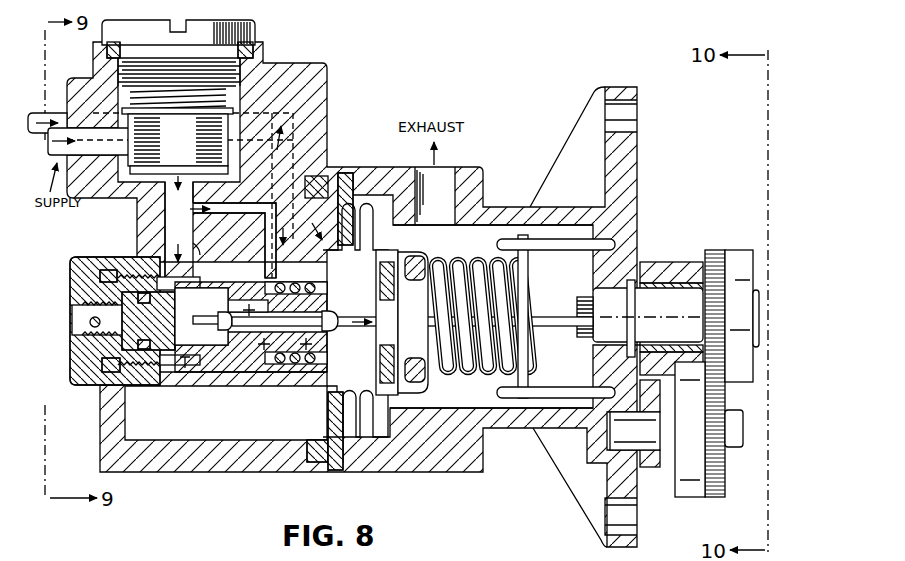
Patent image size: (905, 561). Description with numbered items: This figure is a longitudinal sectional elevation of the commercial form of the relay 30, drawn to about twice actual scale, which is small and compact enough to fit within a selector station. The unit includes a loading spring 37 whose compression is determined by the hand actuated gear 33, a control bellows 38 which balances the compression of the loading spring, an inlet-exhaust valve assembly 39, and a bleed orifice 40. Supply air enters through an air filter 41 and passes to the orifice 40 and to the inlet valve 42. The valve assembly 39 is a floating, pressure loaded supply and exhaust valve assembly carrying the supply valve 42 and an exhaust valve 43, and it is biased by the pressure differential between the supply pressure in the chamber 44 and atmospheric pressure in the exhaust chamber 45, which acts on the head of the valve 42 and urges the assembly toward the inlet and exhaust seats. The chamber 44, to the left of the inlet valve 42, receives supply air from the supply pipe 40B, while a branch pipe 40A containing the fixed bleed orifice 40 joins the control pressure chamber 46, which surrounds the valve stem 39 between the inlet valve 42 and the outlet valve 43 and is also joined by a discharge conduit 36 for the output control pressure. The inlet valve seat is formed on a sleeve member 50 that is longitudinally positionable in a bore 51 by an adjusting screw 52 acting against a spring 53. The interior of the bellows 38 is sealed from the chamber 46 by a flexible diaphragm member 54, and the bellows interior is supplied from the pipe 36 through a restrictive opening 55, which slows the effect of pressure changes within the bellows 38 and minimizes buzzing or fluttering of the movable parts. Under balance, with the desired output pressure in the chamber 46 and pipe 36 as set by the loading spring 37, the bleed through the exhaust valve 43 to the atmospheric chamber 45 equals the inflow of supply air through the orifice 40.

The relay 30 is at (480, 472).
The hand actuated gear 33 is at (712, 498).
The discharge conduit 36 is at (274, 258).
The loading spring 37 is at (472, 380).
The control bellows 38 is at (375, 228).
The inlet-exhaust valve assembly 39 is at (251, 327).
The bleed orifice 40 is at (179, 229).
The branch pipe 40A is at (262, 233).
The supply pipe 40B is at (196, 246).
The air filter 41 is at (177, 141).
The inlet valve 42 is at (220, 328).
The exhaust valve 43 is at (298, 356).
The chamber 44 is at (201, 316).
The exhaust chamber 45 is at (449, 256).
The control pressure chamber 46 is at (290, 360).
The sleeve member 50 is at (283, 293).
The bore 51 is at (161, 330).
The adjusting screw 52 is at (76, 333).
The spring 53 is at (305, 282).
The flexible diaphragm member 54 is at (344, 286).
The restrictive opening 55 is at (302, 200).